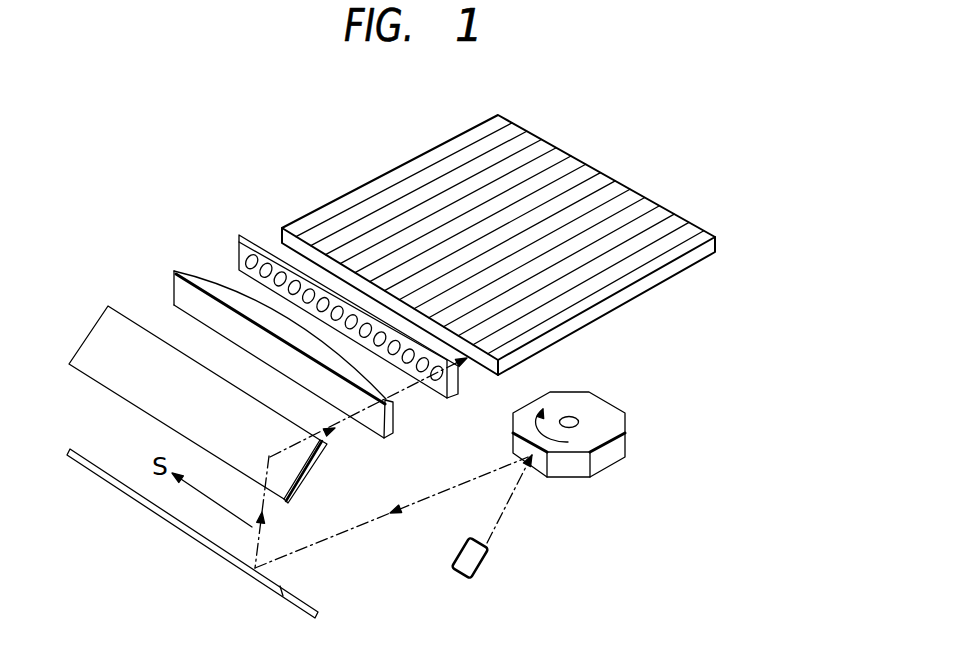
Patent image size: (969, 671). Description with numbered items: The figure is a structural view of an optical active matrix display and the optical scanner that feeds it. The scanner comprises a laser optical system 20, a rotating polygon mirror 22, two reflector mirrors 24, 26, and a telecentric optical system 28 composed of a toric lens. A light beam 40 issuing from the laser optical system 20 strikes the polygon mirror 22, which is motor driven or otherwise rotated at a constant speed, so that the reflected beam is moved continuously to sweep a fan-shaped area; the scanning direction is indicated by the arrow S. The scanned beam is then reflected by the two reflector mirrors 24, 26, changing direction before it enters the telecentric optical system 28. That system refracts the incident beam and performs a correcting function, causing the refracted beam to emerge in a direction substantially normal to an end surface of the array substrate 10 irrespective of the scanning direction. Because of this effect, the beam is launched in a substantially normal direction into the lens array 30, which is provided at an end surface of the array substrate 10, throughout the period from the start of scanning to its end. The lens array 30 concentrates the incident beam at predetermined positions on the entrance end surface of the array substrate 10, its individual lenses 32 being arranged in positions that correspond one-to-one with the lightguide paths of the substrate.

The array substrate 10 is at (440, 143).
The laser optical system 20 is at (478, 563).
The rotating polygon mirror 22 is at (605, 463).
The reflector mirror 24 is at (192, 539).
The reflector mirror 26 is at (184, 404).
The telecentric optical system 28 is at (248, 353).
The lens array 30 is at (255, 239).
The lens 32 is at (240, 258).
The light beam 40 is at (498, 512).